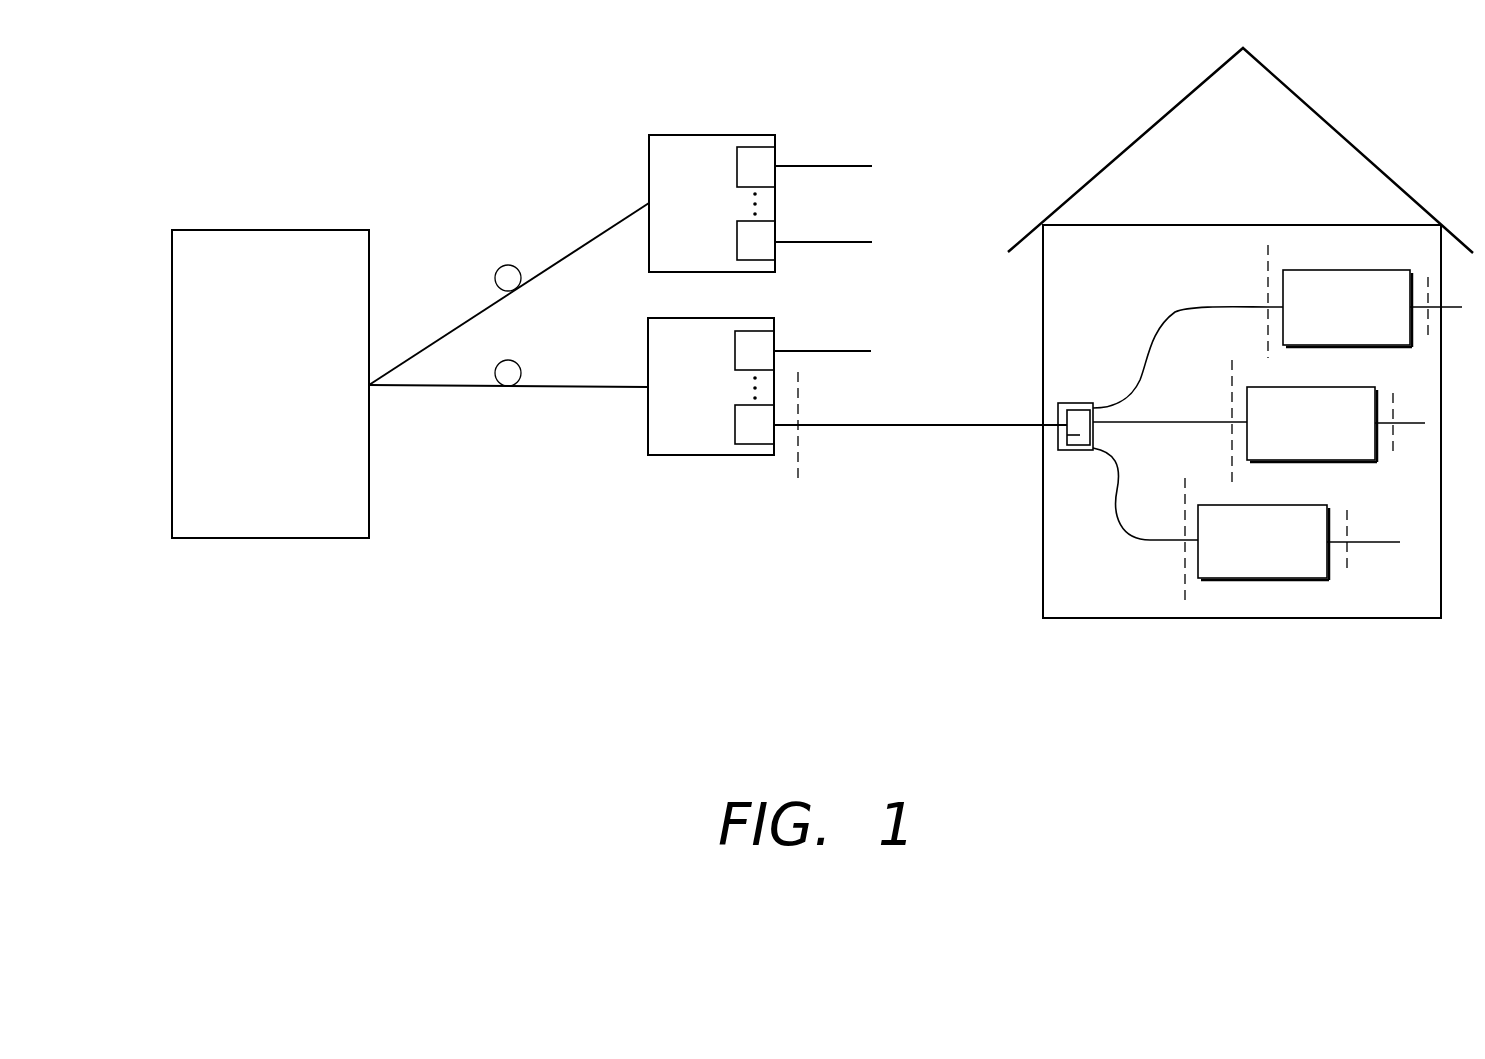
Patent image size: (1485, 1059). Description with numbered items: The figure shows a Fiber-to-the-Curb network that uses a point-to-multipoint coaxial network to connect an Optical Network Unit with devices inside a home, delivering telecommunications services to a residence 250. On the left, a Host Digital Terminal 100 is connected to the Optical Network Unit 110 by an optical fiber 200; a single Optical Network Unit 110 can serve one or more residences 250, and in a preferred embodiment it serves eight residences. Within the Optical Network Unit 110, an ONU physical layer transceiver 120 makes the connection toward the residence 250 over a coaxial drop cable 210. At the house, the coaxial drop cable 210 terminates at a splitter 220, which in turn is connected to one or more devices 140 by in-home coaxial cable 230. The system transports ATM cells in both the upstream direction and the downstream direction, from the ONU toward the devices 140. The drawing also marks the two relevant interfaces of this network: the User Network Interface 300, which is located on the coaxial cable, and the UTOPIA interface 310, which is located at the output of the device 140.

The Host Digital Terminal 100 is at (270, 538).
The Optical Network Unit 110 is at (689, 135).
The ONU physical layer transceiver 120 is at (777, 155).
The optical fiber 200 is at (579, 253).
The coaxial drop cable 210 is at (842, 166).
The splitter 220 is at (1070, 450).
The in-home coaxial cable 230 is at (1128, 533).
The residence 250 is at (1043, 282).
The User Network Interface (UNI) interface 300 is at (798, 389).
The UTOPIA interface 310 is at (1347, 560).
The device 140 is at (1277, 580).